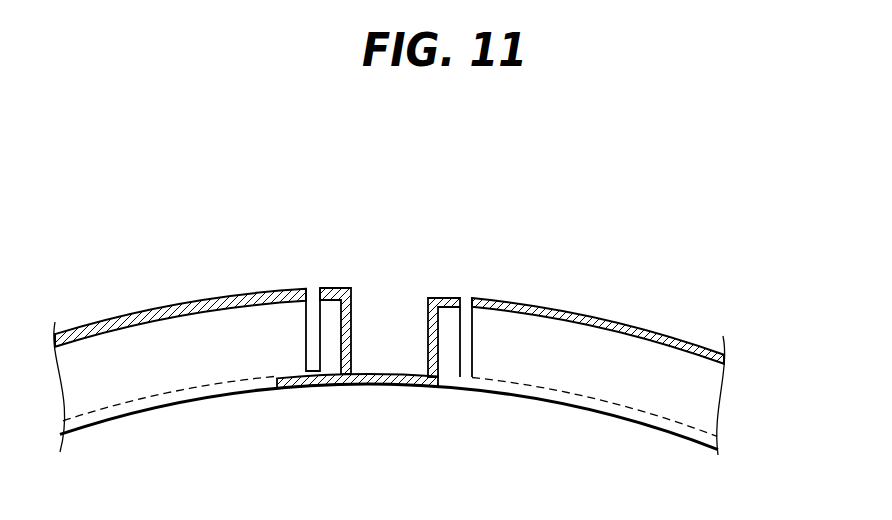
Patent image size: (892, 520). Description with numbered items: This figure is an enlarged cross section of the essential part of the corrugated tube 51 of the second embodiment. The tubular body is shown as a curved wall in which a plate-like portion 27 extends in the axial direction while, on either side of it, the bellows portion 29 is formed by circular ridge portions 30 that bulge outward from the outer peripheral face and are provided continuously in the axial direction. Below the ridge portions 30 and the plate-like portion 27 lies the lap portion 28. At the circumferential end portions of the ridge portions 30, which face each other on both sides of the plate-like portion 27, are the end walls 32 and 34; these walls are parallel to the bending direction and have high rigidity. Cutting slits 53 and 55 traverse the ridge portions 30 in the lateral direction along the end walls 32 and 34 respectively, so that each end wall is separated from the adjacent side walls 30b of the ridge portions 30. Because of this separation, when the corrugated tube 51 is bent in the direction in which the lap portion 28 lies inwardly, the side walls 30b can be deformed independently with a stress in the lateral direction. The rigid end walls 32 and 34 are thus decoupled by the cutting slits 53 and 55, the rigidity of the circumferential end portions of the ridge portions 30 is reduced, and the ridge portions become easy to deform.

The corrugated tube 51 is at (172, 272).
The ridge portion 30 is at (112, 318).
The side wall 30b is at (225, 340).
The bellows portion 29 is at (687, 325).
The lap portion 28 is at (325, 386).
The plate-like portion 27 is at (394, 350).
The cutting slit 53 is at (312, 275).
The end wall 32 is at (350, 288).
The end wall 34 is at (428, 320).
The cutting slit 55 is at (466, 290).